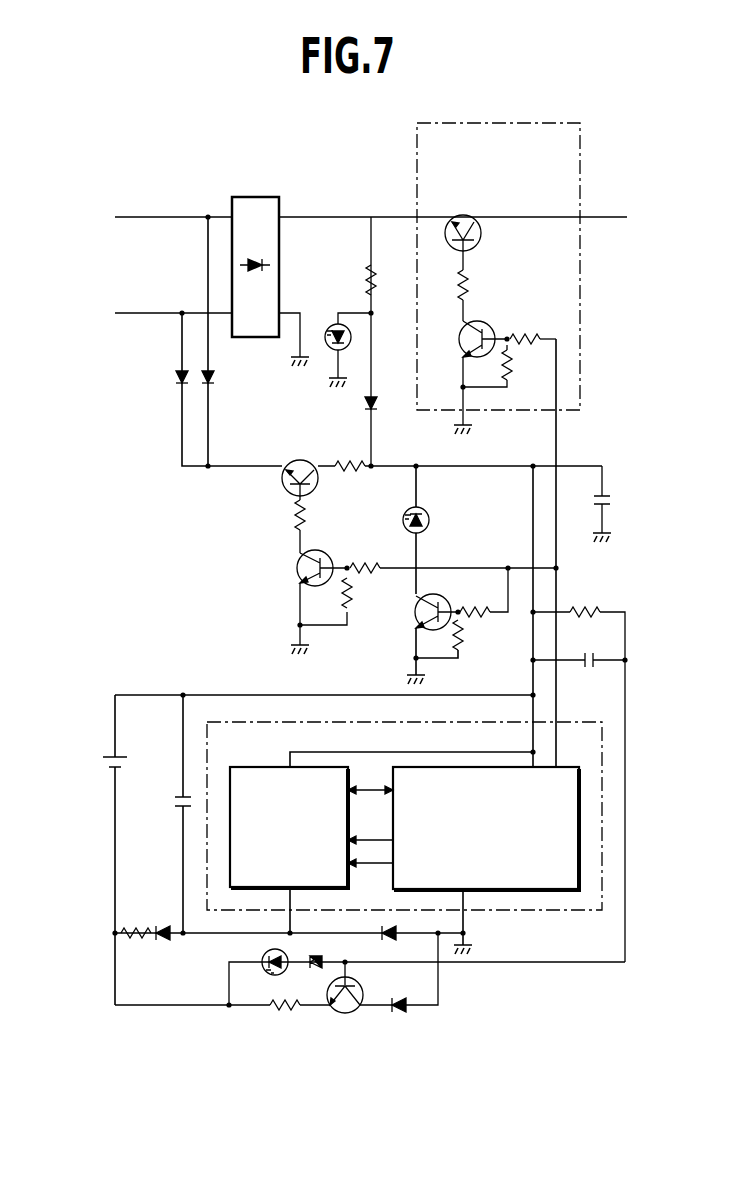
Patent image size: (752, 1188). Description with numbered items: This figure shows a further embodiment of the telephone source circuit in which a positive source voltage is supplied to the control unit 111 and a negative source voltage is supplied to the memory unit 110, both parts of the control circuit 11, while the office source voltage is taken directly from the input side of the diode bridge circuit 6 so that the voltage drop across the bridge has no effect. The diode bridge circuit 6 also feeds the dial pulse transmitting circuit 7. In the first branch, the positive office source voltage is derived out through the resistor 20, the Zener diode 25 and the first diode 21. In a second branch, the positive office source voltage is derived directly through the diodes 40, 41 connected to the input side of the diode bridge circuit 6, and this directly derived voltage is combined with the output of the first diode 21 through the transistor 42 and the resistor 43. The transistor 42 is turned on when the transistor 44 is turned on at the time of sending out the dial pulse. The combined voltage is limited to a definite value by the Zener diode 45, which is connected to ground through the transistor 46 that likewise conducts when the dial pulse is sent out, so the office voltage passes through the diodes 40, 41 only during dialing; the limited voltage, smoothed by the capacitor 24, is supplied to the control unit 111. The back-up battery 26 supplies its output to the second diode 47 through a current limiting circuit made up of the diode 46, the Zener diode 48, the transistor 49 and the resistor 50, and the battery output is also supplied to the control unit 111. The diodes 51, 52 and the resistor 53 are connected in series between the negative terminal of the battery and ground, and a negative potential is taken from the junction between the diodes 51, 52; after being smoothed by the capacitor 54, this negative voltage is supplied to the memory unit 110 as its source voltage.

The diode bridge circuit 6 is at (262, 197).
The dial pulse transmitting circuit 7 is at (583, 157).
The control circuit 11 is at (553, 912).
The resistor 20 is at (366, 280).
The first diode 21 is at (378, 401).
The smoothing capacitor 24 is at (612, 500).
The Zener diode 25 is at (330, 326).
The back-up battery 26 is at (103, 768).
The diode 40 is at (176, 385).
The diode 41 is at (215, 383).
The transistor 42 is at (283, 490).
The resistor 43 is at (350, 462).
The transistor 44 is at (297, 566).
The Zener diode 45 is at (430, 515).
The transistor 46 is at (415, 612).
The second diode 47 is at (399, 1013).
The Zener diode 48 is at (262, 957).
The transistor 49 is at (347, 1012).
The resistor 50 is at (292, 1012).
The diode 51 is at (397, 936).
The diode 52 is at (163, 942).
The resistor 53 is at (139, 929).
The capacitor 54 is at (172, 808).
The memory unit 110 is at (249, 767).
The control unit 111 is at (569, 766).